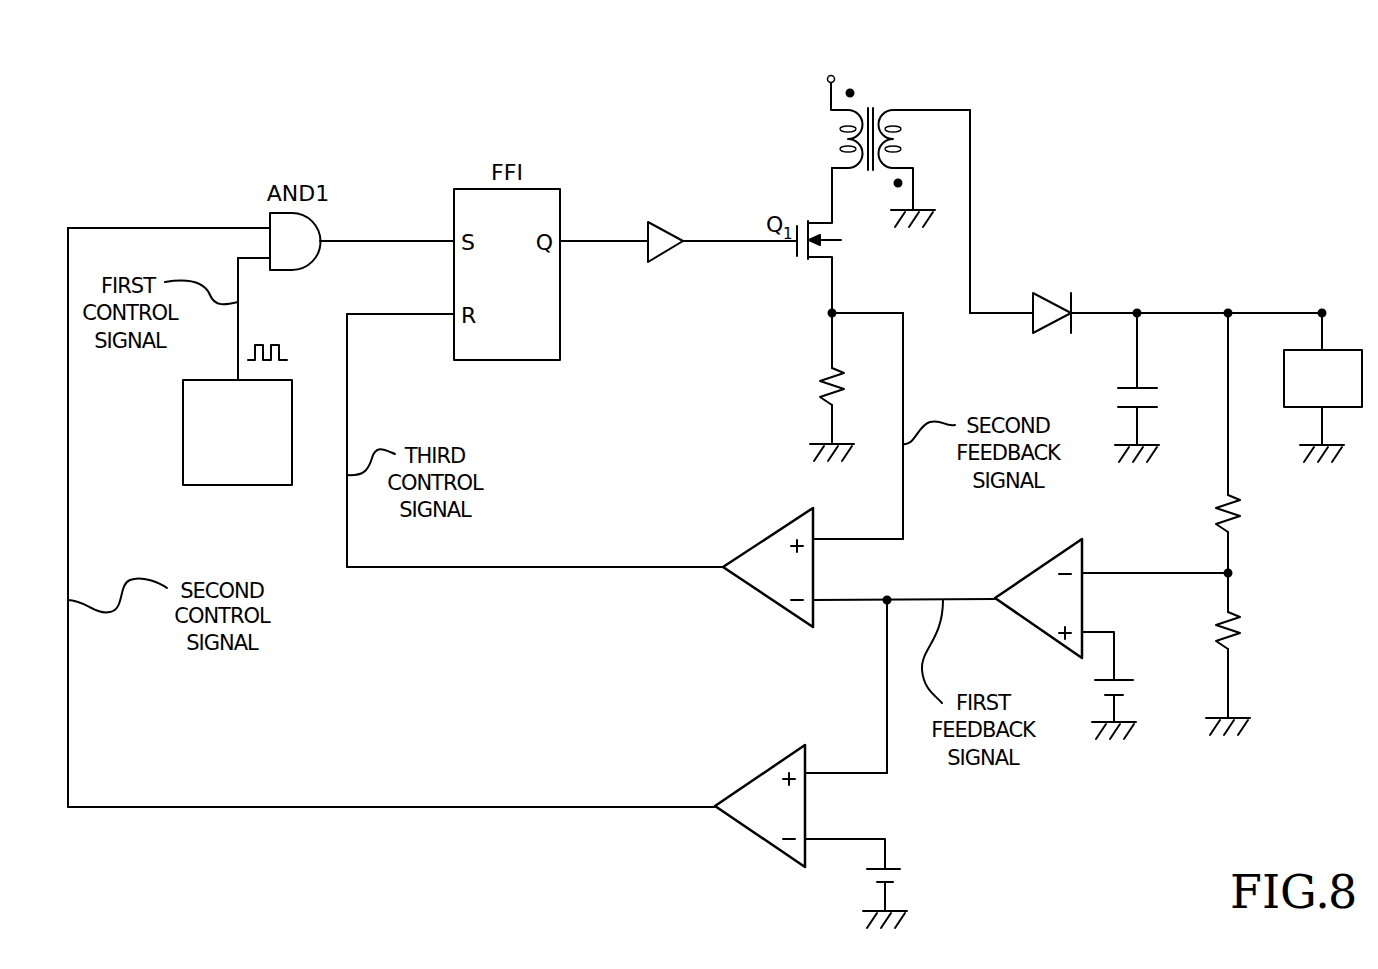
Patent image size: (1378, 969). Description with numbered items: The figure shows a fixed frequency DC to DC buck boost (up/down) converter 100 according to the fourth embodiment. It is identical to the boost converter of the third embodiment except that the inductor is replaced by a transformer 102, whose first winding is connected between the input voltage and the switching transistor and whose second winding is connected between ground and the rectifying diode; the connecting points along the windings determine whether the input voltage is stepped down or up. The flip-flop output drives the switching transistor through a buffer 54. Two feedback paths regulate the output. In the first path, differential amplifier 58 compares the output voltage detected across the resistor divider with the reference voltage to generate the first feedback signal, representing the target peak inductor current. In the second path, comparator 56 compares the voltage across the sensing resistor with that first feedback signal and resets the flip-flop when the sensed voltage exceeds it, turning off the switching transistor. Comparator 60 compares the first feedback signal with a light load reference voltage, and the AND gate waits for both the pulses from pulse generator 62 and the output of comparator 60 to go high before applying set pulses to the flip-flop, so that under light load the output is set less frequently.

The buffer / driver 54 is at (656, 225).
The comparator 56 is at (772, 528).
The differential amplifier 58 is at (1048, 640).
The comparator 60 is at (768, 768).
The pulse generator 62 is at (237, 432).
The fixed frequency DC to DC buck boost converter 100 is at (1080, 391).
The transformer 102 is at (875, 105).